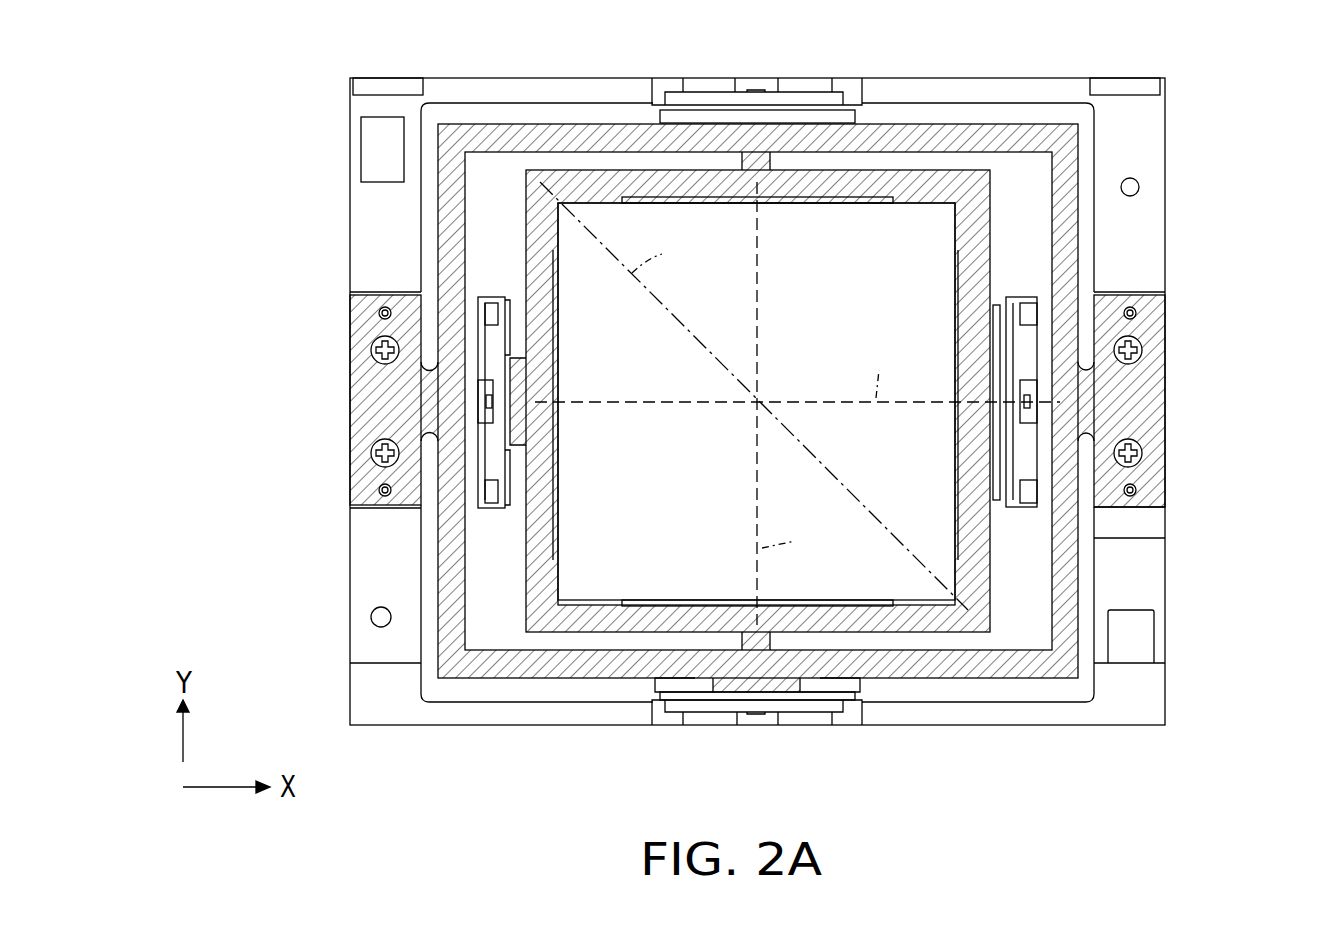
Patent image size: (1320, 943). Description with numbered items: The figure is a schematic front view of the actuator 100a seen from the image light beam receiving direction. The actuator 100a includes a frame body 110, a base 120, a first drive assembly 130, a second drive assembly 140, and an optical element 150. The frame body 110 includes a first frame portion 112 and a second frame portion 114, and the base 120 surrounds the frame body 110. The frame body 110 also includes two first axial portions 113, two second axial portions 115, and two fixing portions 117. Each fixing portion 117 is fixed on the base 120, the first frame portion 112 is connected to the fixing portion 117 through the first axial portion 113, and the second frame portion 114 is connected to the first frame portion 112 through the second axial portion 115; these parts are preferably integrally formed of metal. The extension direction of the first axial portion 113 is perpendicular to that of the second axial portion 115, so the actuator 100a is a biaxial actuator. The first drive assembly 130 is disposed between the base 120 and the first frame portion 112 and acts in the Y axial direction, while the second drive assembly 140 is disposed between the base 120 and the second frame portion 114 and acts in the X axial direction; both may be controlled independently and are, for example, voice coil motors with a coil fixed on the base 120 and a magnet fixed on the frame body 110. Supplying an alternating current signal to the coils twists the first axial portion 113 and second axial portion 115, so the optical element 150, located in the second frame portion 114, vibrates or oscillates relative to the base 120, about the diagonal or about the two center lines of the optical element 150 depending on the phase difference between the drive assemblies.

The actuator 100a is at (760, 400).
The frame body 110 is at (760, 401).
The first frame portion 112 is at (1063, 524).
The first axial portion 113 is at (432, 403).
The second frame portion 114 is at (980, 556).
The second axial portion 115 is at (762, 160).
The fixing portion 117 is at (362, 318).
The base 120 is at (1142, 131).
The first drive assembly 130 is at (810, 115).
The second drive assembly 140 is at (996, 302).
The optical element 150 is at (590, 585).